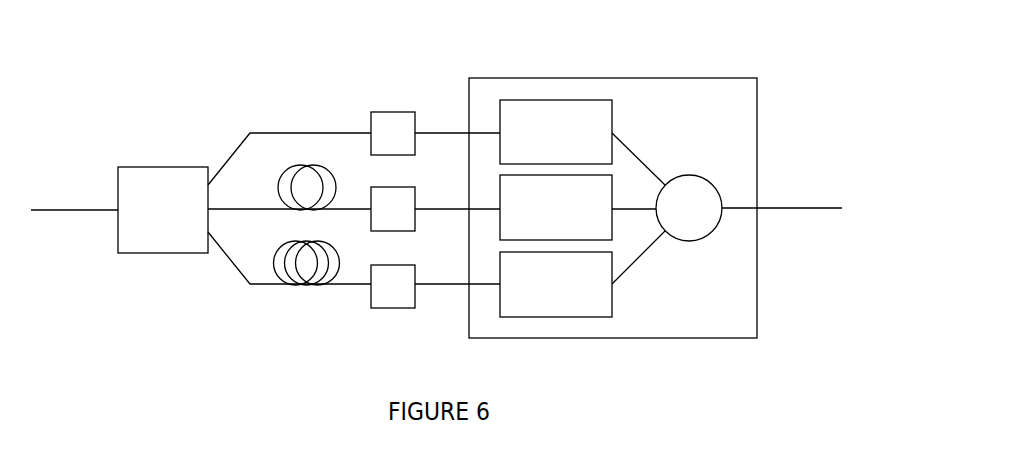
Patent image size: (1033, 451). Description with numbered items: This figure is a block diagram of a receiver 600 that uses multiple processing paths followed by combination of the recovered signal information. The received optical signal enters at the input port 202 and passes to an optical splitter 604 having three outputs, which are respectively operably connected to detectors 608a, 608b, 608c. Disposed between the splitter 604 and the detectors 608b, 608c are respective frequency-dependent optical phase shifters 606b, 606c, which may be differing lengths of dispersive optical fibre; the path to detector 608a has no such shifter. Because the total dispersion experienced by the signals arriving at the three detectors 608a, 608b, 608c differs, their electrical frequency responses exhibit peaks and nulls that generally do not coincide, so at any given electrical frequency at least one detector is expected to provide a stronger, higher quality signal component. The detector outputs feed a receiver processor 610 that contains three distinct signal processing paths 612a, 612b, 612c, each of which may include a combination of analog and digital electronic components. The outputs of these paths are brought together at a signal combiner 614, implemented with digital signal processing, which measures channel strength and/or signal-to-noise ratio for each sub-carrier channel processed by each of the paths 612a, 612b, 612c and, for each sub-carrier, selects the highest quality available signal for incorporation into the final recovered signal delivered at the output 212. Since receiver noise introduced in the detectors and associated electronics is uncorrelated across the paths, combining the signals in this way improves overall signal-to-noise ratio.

The receiver 600 is at (812, 49).
The input port 202 is at (83, 210).
The optical splitter 604 is at (157, 253).
The frequency-dependent optical phase shifter 606b is at (310, 162).
The frequency-dependent optical phase shifter 606c is at (300, 284).
The detector 608a is at (378, 112).
The detector 608b is at (377, 187).
The detector 608c is at (378, 308).
The receiver processor 610 is at (756, 288).
The signal processing path 612a is at (552, 153).
The signal processing path 612b is at (552, 232).
The signal processing path 612c is at (552, 308).
The signal combiner 614 is at (690, 241).
The output 212 is at (780, 208).